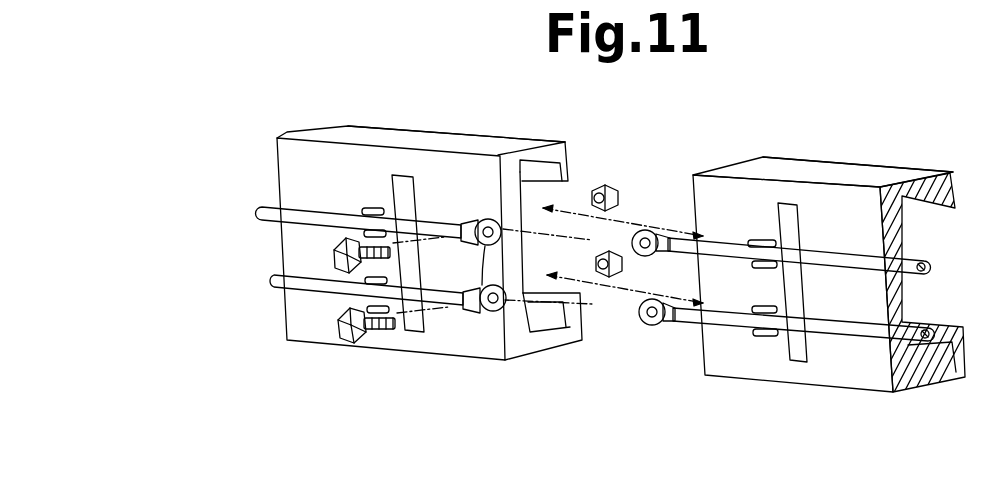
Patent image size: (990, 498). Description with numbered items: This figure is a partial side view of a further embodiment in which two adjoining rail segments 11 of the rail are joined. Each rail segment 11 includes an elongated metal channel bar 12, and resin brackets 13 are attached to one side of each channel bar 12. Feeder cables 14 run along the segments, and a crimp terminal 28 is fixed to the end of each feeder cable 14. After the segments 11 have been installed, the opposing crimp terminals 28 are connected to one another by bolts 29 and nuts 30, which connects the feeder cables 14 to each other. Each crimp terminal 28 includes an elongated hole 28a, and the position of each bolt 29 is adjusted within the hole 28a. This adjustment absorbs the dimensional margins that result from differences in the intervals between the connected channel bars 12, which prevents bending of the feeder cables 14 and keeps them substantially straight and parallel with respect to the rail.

The rail segment 11 is at (505, 130).
The channel bar 12 is at (400, 127).
The resin bracket 13 is at (400, 197).
The feeder cable 14 is at (253, 216).
The crimp terminal 28 is at (480, 216).
The elongated hole 28a is at (712, 286).
The bolt 29 is at (335, 266).
The nut 30 is at (612, 251).